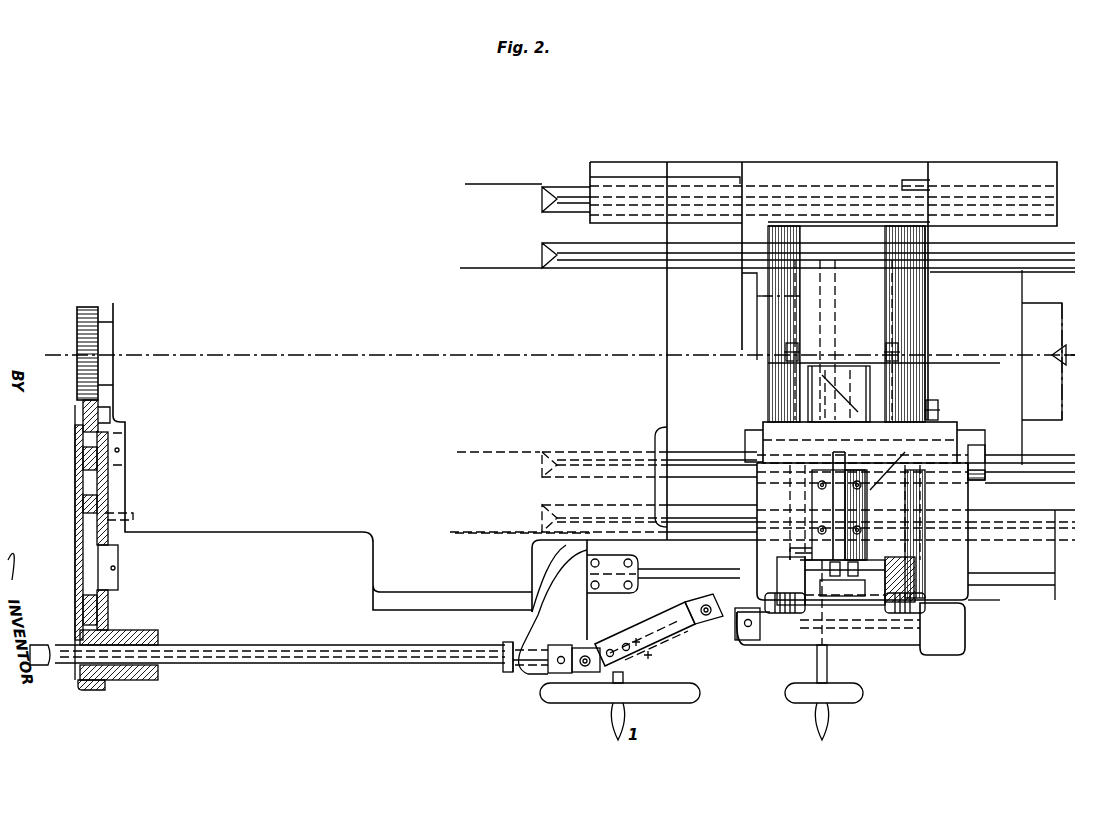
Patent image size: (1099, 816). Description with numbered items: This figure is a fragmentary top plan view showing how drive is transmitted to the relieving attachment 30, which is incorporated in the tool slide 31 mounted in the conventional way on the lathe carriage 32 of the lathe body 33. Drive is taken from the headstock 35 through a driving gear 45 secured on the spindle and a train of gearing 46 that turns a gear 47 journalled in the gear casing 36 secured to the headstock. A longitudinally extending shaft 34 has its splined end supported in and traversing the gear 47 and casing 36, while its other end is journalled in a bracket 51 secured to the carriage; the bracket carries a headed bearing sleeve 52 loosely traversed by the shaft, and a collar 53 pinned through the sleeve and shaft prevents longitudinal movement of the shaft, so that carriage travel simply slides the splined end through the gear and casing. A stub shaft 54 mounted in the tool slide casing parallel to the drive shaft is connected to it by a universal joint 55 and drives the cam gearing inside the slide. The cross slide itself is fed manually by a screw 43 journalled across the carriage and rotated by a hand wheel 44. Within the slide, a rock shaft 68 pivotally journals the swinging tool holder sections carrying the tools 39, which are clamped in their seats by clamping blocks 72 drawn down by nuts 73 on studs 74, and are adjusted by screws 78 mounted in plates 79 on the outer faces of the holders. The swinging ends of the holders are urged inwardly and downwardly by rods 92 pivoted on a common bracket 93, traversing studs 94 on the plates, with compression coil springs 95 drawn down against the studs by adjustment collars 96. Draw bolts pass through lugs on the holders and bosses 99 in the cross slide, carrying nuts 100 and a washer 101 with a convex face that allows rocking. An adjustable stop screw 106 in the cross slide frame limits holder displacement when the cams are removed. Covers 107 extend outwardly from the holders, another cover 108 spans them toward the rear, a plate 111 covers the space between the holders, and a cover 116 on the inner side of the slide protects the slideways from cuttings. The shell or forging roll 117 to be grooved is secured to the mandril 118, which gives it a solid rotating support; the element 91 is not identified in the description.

The relieving attachment 30 is at (956, 534).
The tool slide 31 is at (760, 442).
The lathe carriage 32 is at (988, 645).
The lathe body 33 is at (530, 575).
The shaft 34 is at (292, 648).
The headstock 35 is at (190, 518).
The gear casing 36 is at (110, 630).
The tools 39 is at (838, 462).
The screw 43 is at (830, 665).
The hand wheel 44 is at (845, 705).
The driving gear 45 is at (80, 312).
The train of gearing 46 is at (78, 488).
The gear 47 is at (76, 680).
The bracket 51 is at (512, 642).
The headed bearing sleeve 52 is at (506, 672).
The collar 53 is at (566, 650).
The stub shaft 54 is at (716, 608).
The universal joint 55 is at (650, 633).
The rock shaft 68 is at (978, 460).
The clamping blocks 72 is at (840, 540).
The nuts 73 is at (820, 524).
The studs 74 is at (860, 525).
The screws 78 is at (800, 548).
The plates 79 is at (798, 556).
The block 91 is at (868, 598).
The rods 92 is at (800, 588).
The bracket 93 is at (815, 615).
The studs 94 is at (845, 582).
The compression coil springs 95 is at (905, 614).
The adjustment collars 96 is at (912, 610).
The bosses 99 is at (815, 398).
The nuts 100 is at (888, 352).
The washer 101 is at (800, 358).
The stop screw 106 is at (938, 412).
The covers 107 is at (745, 563).
The cover 108 is at (905, 572).
The plate 111 is at (880, 470).
The cover 116 is at (922, 356).
The shell or forging roll 117 is at (1012, 450).
The mandril 118 is at (1042, 312).